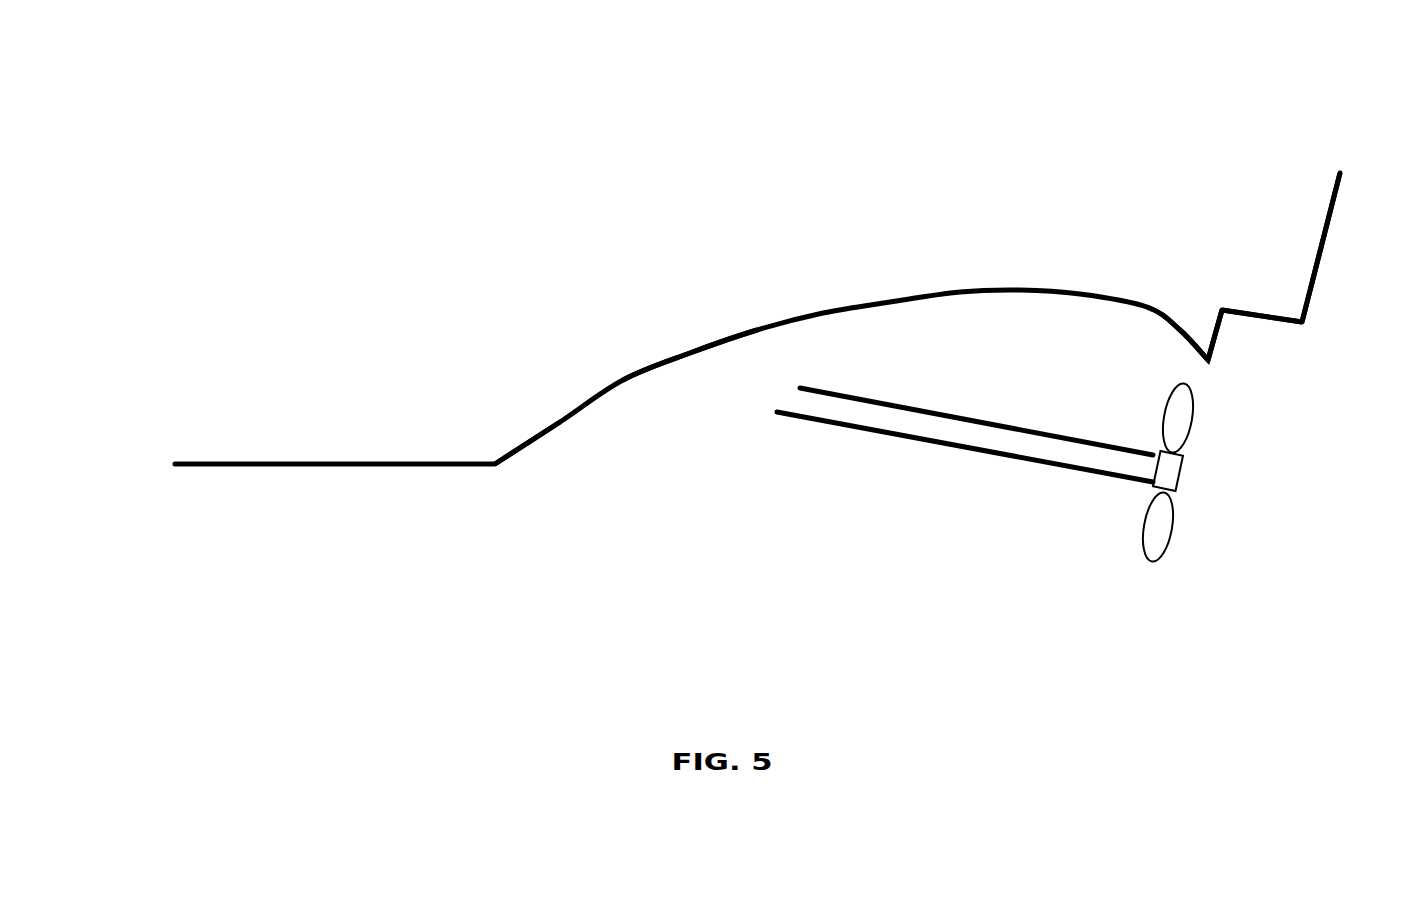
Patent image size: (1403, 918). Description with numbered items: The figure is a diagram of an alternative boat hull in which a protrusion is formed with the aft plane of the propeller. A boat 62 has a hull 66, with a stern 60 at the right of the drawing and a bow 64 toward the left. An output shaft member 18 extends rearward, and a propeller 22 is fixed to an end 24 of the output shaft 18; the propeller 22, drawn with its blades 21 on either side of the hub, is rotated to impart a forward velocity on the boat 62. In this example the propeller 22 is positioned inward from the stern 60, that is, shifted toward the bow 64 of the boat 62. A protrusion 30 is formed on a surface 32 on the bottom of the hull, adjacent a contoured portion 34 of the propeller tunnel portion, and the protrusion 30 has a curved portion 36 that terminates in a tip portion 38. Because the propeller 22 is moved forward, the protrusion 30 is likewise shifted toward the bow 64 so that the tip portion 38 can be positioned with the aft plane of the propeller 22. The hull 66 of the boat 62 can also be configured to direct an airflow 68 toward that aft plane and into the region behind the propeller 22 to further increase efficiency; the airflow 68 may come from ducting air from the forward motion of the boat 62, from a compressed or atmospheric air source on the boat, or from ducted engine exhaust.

The output shaft member 18 is at (892, 422).
The propeller blades 21 is at (1180, 405).
The propeller 22 is at (1200, 497).
The end 24 is at (1107, 454).
The protrusion 30 is at (1191, 293).
The surface 32 is at (688, 359).
The contoured portion 34 is at (545, 451).
The curved portion 36 is at (1180, 333).
The tip portion 38 is at (1212, 362).
The stern 60 is at (1326, 242).
The boat 62 is at (331, 159).
The bow 64 is at (160, 78).
The hull 66 is at (451, 249).
The airflow 68 is at (1302, 326).